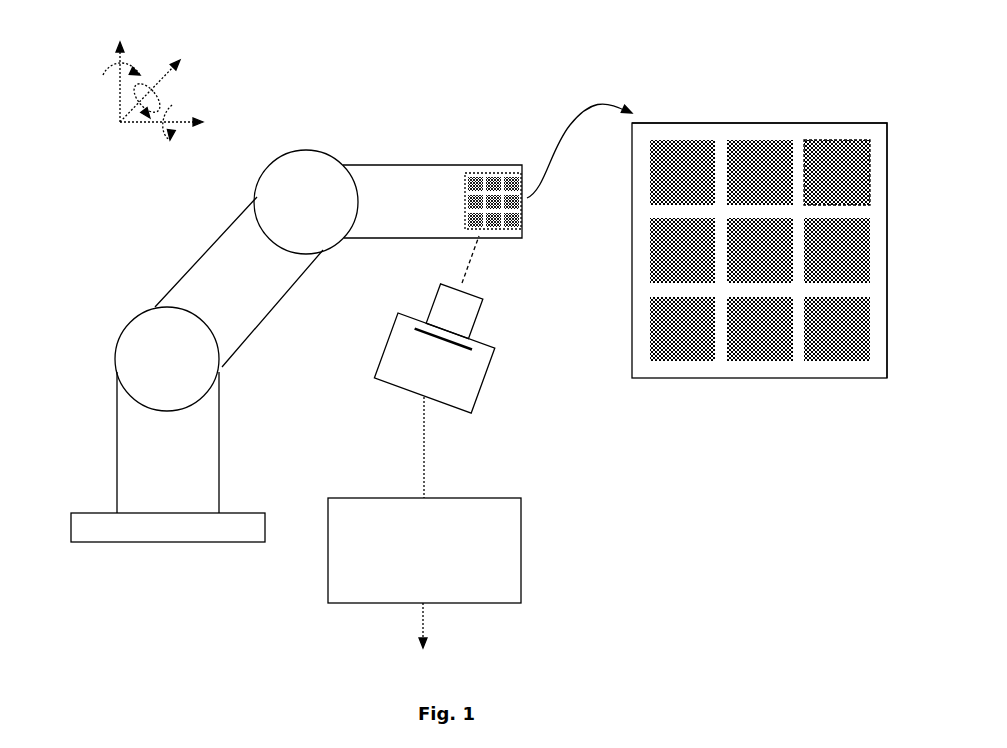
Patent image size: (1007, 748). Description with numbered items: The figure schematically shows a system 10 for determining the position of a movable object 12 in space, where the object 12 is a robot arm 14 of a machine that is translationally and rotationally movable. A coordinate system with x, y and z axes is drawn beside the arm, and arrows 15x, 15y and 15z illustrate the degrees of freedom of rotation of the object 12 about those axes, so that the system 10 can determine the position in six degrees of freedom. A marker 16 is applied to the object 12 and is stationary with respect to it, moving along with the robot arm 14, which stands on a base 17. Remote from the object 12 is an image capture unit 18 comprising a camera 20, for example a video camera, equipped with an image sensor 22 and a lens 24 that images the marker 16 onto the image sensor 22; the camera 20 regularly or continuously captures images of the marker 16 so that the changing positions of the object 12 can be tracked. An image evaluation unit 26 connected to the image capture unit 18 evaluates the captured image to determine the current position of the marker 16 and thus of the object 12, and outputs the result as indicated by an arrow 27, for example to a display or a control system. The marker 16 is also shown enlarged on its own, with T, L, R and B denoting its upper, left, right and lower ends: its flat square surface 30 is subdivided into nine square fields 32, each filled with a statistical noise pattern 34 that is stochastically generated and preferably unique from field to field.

The system 10 is at (576, 446).
The movable object 12 is at (440, 120).
The robot arm 14 is at (396, 182).
The arrow 15x is at (178, 108).
The arrow 15y is at (122, 104).
The arrow 15z is at (103, 66).
The marker 16 is at (492, 162).
The robot base 17 is at (108, 420).
The image capture unit 18 is at (360, 384).
The camera 20 is at (393, 362).
The image sensor 22 is at (460, 350).
The lens 24 is at (440, 298).
The image evaluation unit 26 is at (338, 583).
The arrow 27 is at (420, 620).
The surface 30 is at (880, 146).
The fields 32 is at (842, 140).
The statistical noise pattern 34 is at (870, 172).